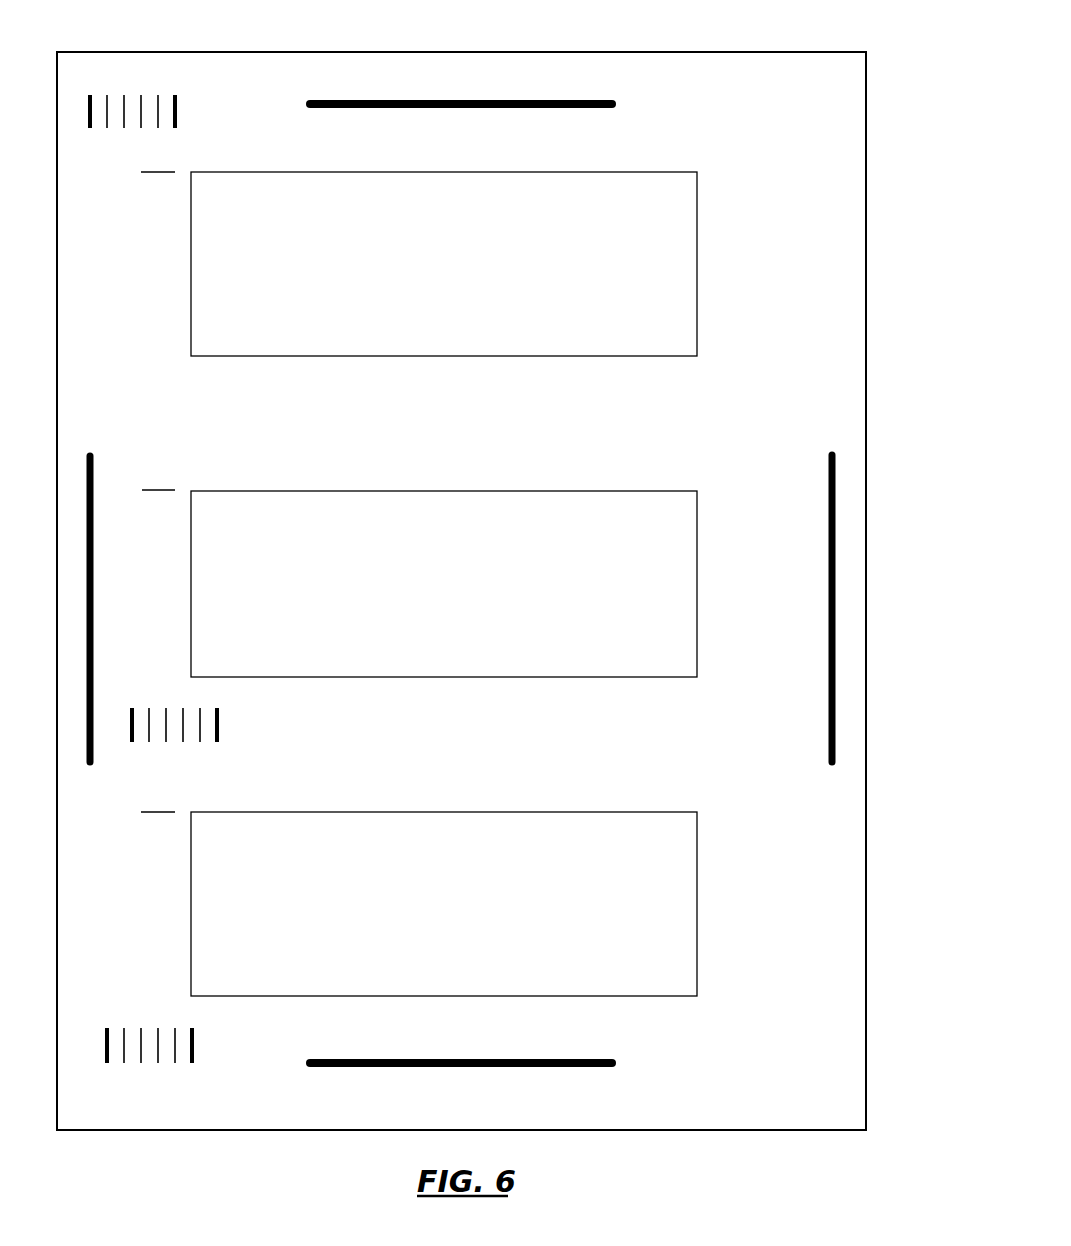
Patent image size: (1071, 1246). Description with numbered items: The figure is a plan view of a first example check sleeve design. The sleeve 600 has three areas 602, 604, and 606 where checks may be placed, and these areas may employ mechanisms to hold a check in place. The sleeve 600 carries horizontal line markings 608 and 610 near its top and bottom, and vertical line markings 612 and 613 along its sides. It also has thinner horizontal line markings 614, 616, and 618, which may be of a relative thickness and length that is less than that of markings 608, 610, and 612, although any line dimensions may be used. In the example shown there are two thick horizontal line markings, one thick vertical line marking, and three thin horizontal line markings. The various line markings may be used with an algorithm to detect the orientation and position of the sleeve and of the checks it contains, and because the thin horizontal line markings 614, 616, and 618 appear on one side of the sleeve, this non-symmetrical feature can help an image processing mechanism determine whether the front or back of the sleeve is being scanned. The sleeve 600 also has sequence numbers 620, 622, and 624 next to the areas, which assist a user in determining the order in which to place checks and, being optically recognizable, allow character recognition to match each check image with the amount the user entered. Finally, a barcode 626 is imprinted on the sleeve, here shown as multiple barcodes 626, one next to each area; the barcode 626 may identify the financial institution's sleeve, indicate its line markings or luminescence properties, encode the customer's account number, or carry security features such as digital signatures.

The sleeve 600 is at (663, 45).
The area 602 is at (663, 188).
The area 604 is at (629, 507).
The area 606 is at (578, 828).
The horizontal line marking 608 is at (628, 105).
The horizontal line marking 610 is at (630, 1063).
The vertical line marking 612 is at (107, 473).
The vertical line marking 613 is at (817, 439).
The horizontal line marking 614 is at (157, 205).
The horizontal line marking 616 is at (175, 515).
The horizontal line marking 618 is at (167, 827).
The sequence number 620 is at (782, 288).
The sequence number 622 is at (782, 610).
The sequence number 624 is at (763, 947).
The barcode 626 is at (182, 108).